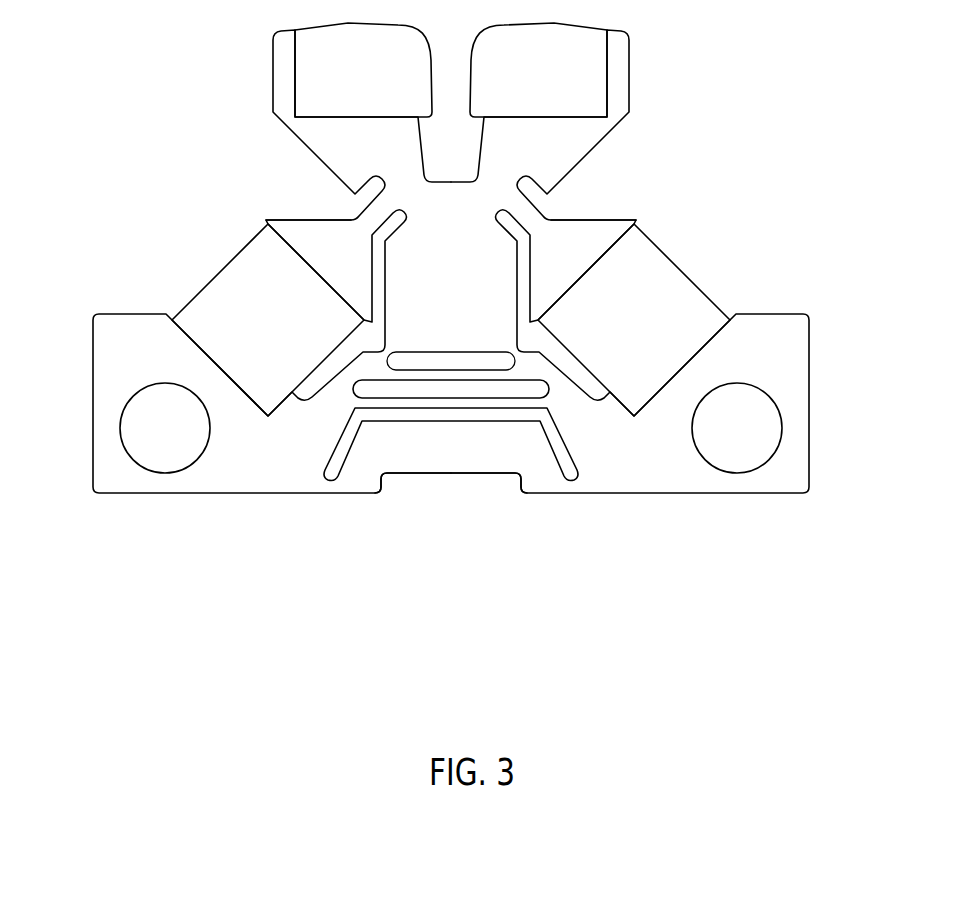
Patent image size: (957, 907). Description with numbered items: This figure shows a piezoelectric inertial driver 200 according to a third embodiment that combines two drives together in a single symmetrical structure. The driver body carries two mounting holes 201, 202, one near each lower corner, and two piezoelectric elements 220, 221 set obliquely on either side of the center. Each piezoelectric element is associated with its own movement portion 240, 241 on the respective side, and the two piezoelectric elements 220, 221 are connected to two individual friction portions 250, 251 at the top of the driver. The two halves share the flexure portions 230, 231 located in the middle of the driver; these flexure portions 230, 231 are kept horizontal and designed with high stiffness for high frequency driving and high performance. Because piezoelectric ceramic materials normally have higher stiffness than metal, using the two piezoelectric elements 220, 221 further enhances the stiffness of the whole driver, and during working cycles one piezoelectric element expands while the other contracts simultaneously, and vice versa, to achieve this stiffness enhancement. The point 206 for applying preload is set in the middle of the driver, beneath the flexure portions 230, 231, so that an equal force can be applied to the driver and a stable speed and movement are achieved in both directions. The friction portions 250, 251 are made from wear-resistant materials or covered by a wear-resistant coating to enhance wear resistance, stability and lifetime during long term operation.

The housing body 200 is at (148, 355).
The mounting hole 201 is at (188, 437).
The mounting hole 202 is at (745, 448).
The point for preload applying 206 is at (450, 473).
The piezoelectric element 220 is at (267, 293).
The piezoelectric element 221 is at (692, 308).
The flexure portion 230 is at (416, 400).
The flexure portion 231 is at (455, 378).
The movement portion 240 is at (320, 225).
The movement portion 241 is at (577, 232).
The friction portion 250 is at (372, 82).
The friction portion 251 is at (557, 77).